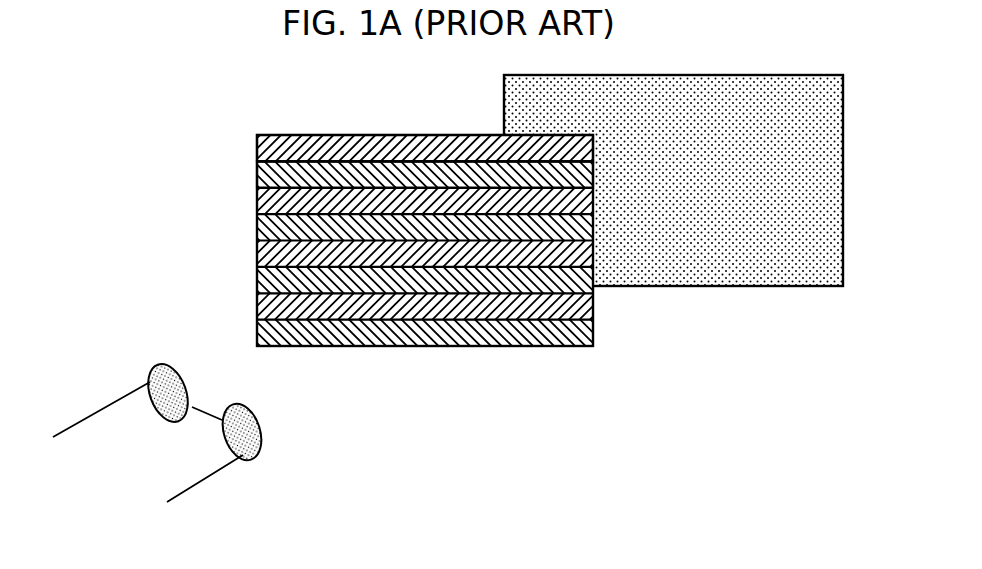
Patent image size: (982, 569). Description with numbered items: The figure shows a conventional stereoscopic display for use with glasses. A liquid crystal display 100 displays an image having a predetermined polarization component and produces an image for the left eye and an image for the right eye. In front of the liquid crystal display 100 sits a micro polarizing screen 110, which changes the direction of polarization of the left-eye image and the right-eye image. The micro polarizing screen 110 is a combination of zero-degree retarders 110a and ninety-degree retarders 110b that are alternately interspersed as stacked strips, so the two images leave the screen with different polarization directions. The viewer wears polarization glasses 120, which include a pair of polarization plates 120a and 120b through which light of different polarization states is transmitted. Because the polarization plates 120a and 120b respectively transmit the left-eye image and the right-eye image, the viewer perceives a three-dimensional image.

The liquid crystal display 100 is at (758, 286).
The micro polarizing screen 110 is at (508, 346).
The 0° retarder 110a is at (264, 150).
The 90° retarder 110b is at (264, 178).
The polarization glasses 120 is at (198, 482).
The polarization plate 120a is at (177, 383).
The polarization plate 120b is at (253, 423).